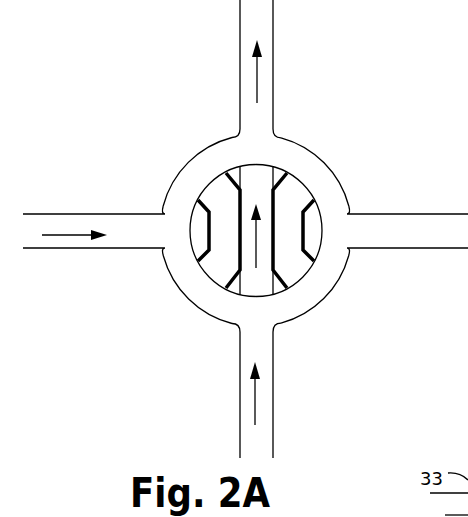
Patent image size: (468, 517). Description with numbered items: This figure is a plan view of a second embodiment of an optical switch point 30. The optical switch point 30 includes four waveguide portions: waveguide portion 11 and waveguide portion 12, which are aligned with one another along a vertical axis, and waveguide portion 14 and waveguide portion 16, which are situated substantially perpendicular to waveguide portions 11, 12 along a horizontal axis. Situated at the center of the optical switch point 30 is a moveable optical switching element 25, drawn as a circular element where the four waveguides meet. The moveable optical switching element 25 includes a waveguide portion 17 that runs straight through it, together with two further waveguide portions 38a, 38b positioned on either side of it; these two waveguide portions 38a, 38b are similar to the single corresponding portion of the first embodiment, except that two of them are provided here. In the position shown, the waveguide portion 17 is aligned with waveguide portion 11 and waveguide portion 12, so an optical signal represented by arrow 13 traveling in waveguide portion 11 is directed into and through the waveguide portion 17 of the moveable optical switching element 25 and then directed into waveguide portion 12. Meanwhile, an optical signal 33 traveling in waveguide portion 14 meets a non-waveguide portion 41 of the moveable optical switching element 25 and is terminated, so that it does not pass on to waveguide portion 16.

The optical switch point 30 is at (128, 43).
The waveguide portion 12 is at (273, 33).
The waveguide portion 11 is at (273, 345).
The arrow 13 is at (255, 398).
The waveguide portion 14 is at (117, 250).
The waveguide portion 16 is at (398, 248).
The optical signal 33 is at (76, 224).
The moveable optical switching element 25 is at (227, 160).
The waveguide portion 17 is at (275, 168).
The non-waveguide portion 41 is at (192, 221).
The waveguide portion 38a is at (192, 243).
The waveguide portion 38b is at (320, 243).